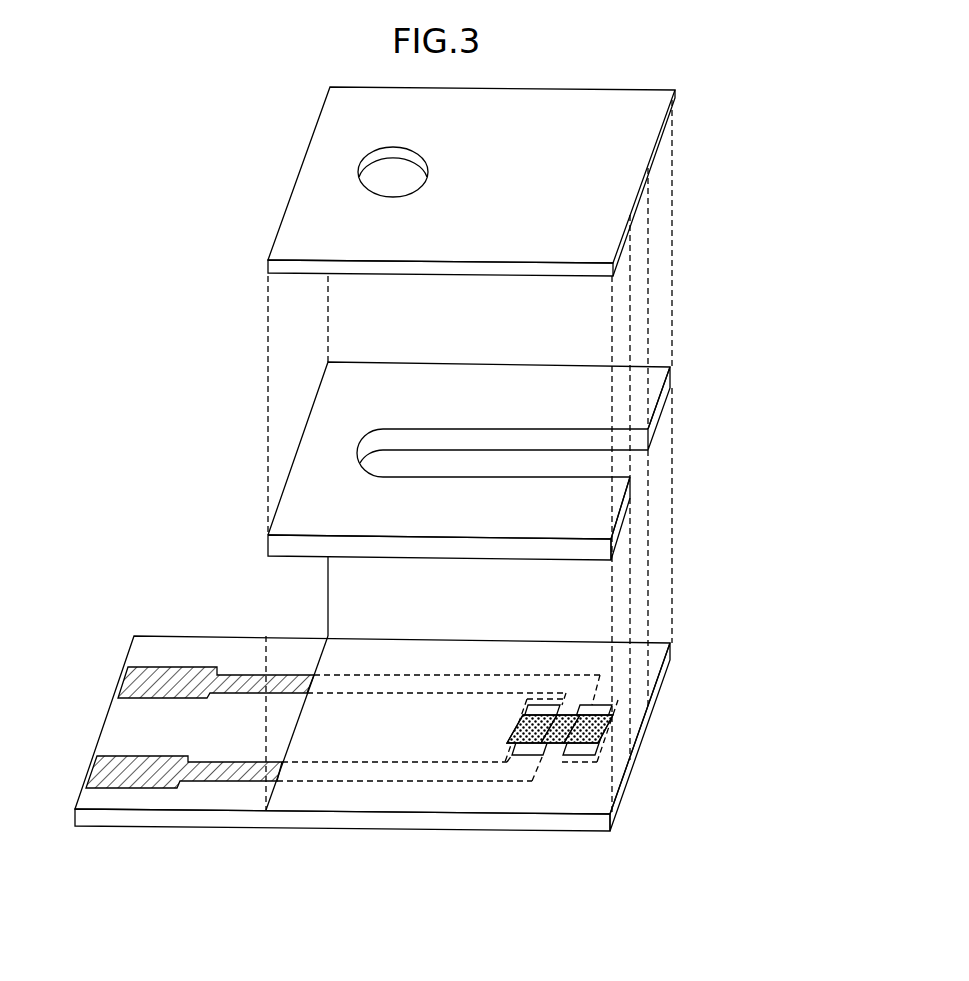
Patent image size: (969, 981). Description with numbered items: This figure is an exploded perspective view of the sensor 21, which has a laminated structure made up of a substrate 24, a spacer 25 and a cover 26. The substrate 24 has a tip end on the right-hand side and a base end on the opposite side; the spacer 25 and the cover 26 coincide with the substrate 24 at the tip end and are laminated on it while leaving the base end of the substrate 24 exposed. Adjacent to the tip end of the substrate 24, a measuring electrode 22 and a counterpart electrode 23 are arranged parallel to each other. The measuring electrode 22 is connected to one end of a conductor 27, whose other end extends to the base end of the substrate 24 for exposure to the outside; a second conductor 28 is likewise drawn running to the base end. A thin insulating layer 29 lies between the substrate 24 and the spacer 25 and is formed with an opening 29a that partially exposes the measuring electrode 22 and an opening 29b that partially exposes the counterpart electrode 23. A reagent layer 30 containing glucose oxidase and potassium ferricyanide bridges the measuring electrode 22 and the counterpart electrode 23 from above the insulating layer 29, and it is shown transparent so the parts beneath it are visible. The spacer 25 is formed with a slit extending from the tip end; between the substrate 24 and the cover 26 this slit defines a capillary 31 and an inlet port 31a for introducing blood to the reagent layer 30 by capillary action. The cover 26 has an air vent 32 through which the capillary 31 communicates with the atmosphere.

The sensor 21 is at (752, 117).
The measuring electrode 22 is at (535, 748).
The counterpart electrode 23 is at (597, 712).
The substrate 24 is at (137, 728).
The spacer 25 is at (310, 448).
The cover 26 is at (318, 195).
The conductor 27 is at (110, 752).
The upper terminal pad 28 is at (168, 678).
The insulating layer 29 is at (310, 730).
The opening 29a is at (522, 752).
The opening 29b is at (593, 712).
The reagent layer 30 is at (592, 741).
The capillary 31 is at (622, 465).
The inlet port 31a is at (655, 438).
The air vent 32 is at (390, 175).